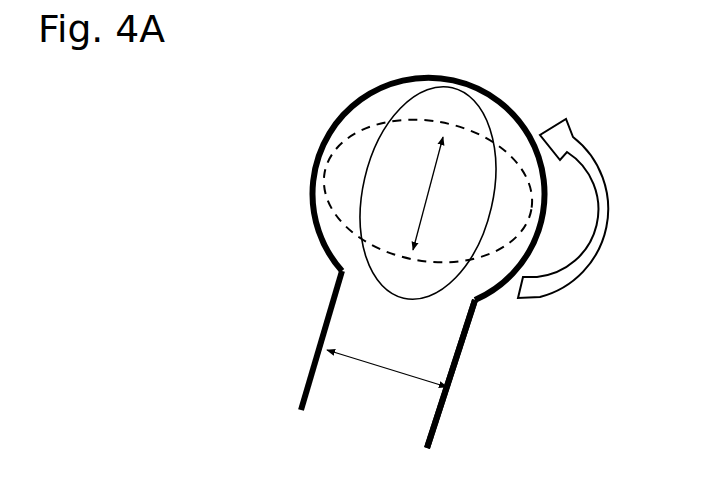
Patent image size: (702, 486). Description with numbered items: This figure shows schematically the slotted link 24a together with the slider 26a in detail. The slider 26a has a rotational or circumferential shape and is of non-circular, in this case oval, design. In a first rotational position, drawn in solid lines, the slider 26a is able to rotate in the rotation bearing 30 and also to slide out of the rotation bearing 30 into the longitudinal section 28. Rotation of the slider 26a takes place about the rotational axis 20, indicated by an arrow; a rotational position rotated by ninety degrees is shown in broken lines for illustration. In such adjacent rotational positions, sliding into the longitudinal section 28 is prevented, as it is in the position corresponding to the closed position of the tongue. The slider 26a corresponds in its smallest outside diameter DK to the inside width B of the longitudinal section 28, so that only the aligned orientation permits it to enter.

The rotational axis 20 is at (430, 190).
The slotted link 24a is at (327, 313).
The slider 26a is at (356, 131).
The longitudinal section 28 is at (457, 368).
The rotation bearing 30 is at (513, 117).
The smallest outside diameter DK is at (445, 193).
The width B is at (387, 377).